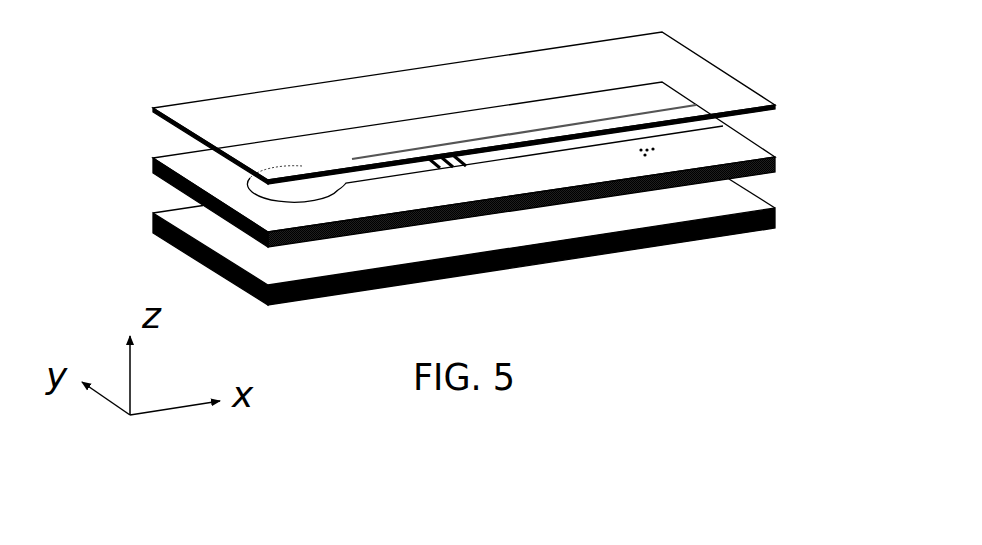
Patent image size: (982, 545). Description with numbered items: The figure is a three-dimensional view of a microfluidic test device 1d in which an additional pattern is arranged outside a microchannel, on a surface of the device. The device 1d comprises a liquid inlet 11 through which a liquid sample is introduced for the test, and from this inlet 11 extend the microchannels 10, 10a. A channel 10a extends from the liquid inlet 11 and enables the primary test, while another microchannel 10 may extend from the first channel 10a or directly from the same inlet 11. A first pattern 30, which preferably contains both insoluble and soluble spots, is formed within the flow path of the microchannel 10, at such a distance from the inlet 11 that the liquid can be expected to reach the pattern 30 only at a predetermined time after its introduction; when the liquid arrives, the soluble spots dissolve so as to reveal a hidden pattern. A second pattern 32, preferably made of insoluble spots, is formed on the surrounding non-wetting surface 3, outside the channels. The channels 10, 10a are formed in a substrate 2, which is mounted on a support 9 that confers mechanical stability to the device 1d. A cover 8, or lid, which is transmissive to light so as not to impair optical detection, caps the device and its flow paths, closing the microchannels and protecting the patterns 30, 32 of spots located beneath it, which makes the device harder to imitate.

The test device 1d is at (434, 206).
The substrate 2 is at (780, 158).
The surrounding surface 3 is at (434, 133).
The cover 8 is at (780, 105).
The support 9 is at (780, 228).
The microchannel 10 is at (494, 108).
The channel 10a is at (536, 163).
The liquid inlet 11 is at (250, 196).
The first pattern 30 is at (543, 127).
The second pattern 32 is at (645, 150).